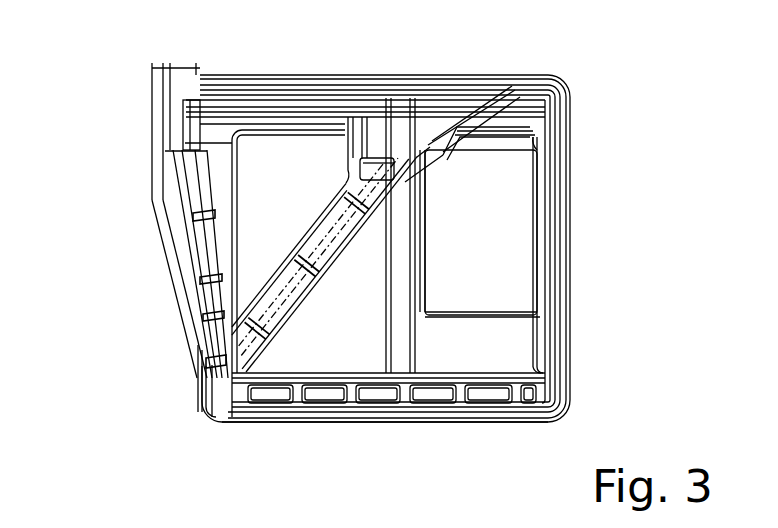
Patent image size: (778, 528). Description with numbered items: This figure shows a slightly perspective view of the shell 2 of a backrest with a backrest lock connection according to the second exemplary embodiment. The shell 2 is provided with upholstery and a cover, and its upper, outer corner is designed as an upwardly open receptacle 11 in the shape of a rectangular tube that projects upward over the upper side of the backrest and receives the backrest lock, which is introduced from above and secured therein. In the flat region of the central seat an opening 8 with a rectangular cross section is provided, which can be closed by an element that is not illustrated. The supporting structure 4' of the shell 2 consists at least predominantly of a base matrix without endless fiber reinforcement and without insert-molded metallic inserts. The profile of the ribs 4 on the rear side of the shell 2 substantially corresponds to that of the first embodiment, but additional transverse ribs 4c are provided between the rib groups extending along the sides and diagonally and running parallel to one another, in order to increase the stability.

The shell 2 is at (186, 324).
The ribs 4 is at (178, 264).
The supporting structure 4' is at (241, 186).
The transverse ribs 4c is at (352, 398).
The opening 8 is at (495, 242).
The receptacle 11 is at (150, 82).